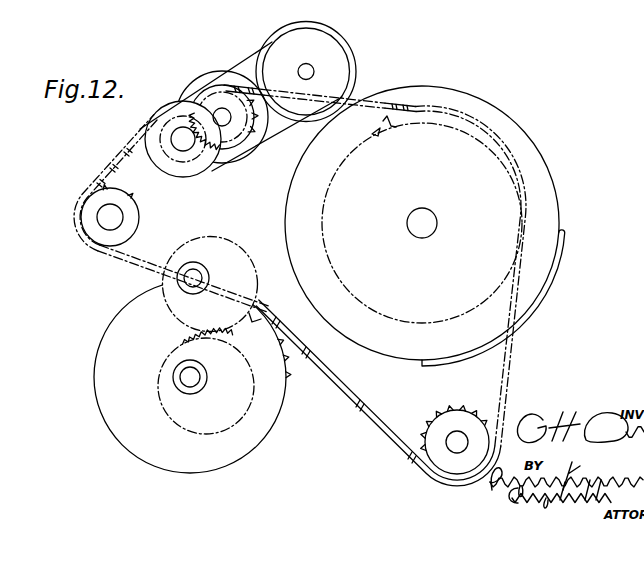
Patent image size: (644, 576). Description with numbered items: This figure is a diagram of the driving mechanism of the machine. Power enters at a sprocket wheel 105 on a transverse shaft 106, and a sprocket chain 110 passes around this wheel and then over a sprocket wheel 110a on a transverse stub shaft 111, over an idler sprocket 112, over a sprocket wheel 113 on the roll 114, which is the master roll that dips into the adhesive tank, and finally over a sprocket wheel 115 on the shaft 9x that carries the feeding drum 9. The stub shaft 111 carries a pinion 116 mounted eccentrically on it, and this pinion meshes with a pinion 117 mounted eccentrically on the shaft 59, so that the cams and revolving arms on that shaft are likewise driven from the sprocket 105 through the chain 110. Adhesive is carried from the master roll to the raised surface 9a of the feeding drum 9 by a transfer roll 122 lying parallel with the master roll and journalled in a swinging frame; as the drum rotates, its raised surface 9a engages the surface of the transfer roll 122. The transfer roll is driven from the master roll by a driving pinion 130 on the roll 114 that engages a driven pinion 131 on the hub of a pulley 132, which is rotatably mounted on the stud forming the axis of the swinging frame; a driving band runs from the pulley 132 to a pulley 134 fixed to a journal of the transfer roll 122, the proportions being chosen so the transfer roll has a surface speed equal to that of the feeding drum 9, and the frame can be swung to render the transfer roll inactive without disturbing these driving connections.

The feeding drum 9 is at (537, 153).
The shaft 9x is at (433, 221).
The raised surface 9a is at (563, 258).
The shaft 59 is at (194, 278).
The sprocket wheel 105 is at (497, 425).
The transverse shaft 106 is at (458, 433).
The sprocket chain 110 is at (380, 405).
The sprocket wheel 110a is at (283, 391).
The transverse stub shaft 111 is at (198, 377).
The idler sprocket 112 is at (80, 205).
The sprocket wheel 113 is at (256, 120).
The roll 114 is at (200, 75).
The sprocket wheel 115 is at (389, 128).
The pinion 116 is at (249, 368).
The pinion 117 is at (259, 327).
The transfer roll 122 is at (318, 33).
The driving pinion 130 is at (213, 140).
The driven pinion 131 is at (197, 159).
The pulley 132 is at (162, 106).
The pulley 134 is at (340, 63).